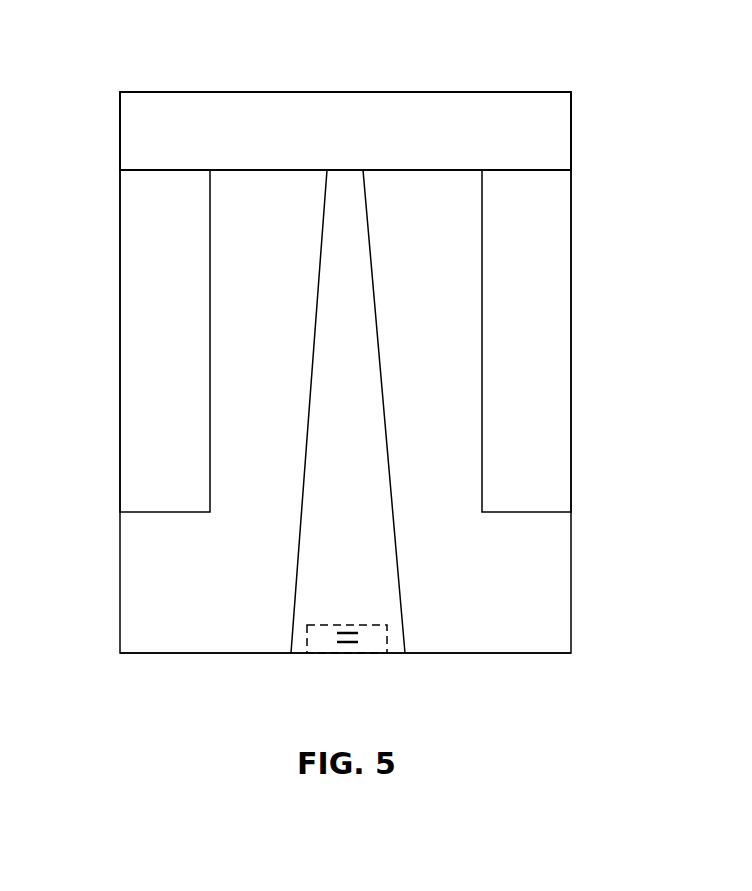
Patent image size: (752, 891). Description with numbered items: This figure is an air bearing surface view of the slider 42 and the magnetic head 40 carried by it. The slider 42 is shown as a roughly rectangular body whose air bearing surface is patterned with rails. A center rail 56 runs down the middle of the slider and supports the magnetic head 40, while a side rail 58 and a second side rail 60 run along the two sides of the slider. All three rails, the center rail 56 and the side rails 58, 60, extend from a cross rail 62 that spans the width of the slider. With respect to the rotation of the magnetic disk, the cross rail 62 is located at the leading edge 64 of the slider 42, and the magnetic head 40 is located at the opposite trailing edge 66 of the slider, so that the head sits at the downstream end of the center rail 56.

The magnetic head 40 is at (325, 643).
The slider 42 is at (119, 602).
The center rail 56 is at (330, 285).
The side rail 58 is at (137, 252).
The side rail 60 is at (553, 250).
The cross rail 62 is at (263, 103).
The leading edge 64 is at (447, 92).
The trailing edge 66 is at (468, 653).